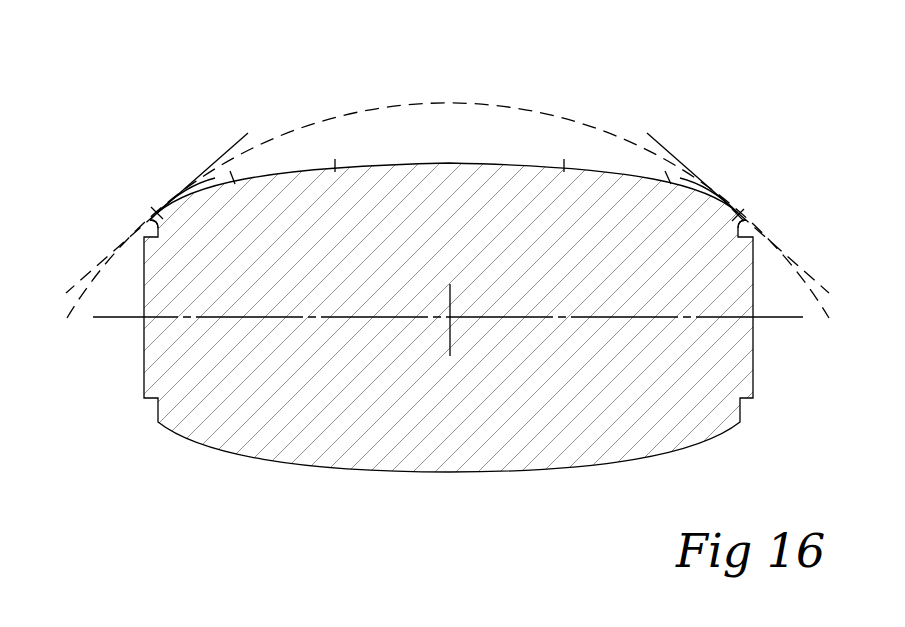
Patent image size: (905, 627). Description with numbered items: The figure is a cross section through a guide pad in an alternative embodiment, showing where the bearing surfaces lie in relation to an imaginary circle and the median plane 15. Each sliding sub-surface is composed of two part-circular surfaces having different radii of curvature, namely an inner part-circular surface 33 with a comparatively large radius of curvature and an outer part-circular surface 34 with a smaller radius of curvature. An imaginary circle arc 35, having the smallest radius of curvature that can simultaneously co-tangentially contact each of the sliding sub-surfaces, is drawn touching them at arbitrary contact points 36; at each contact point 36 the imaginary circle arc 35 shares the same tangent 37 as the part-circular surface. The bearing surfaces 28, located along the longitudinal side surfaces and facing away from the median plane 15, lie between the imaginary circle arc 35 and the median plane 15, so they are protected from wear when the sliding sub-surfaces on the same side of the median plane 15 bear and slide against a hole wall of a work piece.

The median plane 15 is at (122, 318).
The bearing surface 28 is at (152, 222).
The inner part-circular surface 33 is at (285, 164).
The outer part-circular surface 34 is at (212, 178).
The imaginary circle arc 35 is at (441, 102).
The contact point 36 is at (156, 211).
The tangent 37 is at (92, 272).